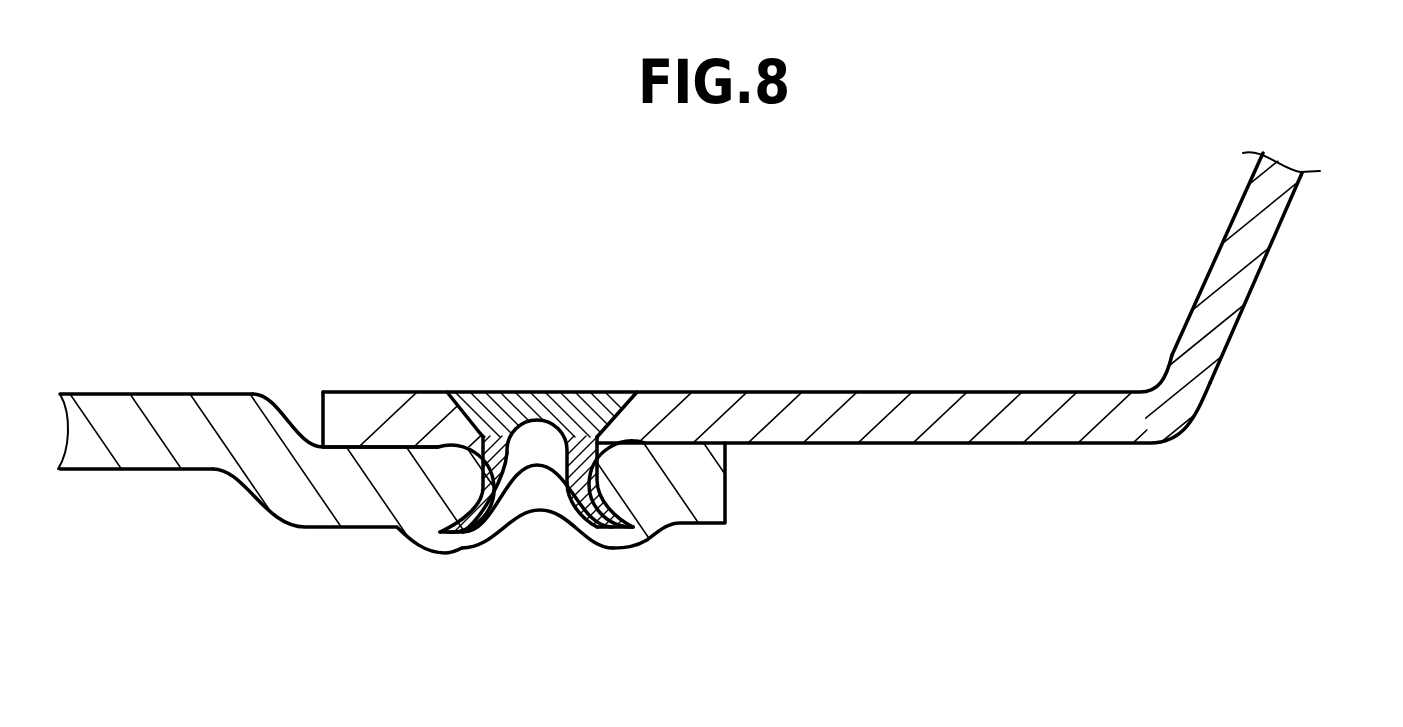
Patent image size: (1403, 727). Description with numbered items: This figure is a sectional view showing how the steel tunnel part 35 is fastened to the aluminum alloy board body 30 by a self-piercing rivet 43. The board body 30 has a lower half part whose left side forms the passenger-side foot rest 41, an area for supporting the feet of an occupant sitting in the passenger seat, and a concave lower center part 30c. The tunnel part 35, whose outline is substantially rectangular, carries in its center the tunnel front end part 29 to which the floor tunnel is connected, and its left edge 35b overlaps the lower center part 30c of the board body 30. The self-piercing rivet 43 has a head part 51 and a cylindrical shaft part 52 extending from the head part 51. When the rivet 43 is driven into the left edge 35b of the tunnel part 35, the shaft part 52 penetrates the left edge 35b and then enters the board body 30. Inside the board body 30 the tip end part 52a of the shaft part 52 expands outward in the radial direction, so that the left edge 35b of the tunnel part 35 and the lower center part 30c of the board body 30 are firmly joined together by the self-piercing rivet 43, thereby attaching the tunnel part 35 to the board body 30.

The tunnel front end part 29 is at (1280, 218).
The board body 30 is at (117, 392).
The lower center part 30c is at (537, 500).
The tunnel part 35 is at (1003, 392).
The left edge 35b is at (417, 392).
The passenger-side foot rest 41 is at (205, 392).
The self-piercing rivet 43 is at (532, 388).
The head part 51 is at (583, 408).
The shaft part 52 is at (593, 458).
The tip end part 52a is at (462, 540).